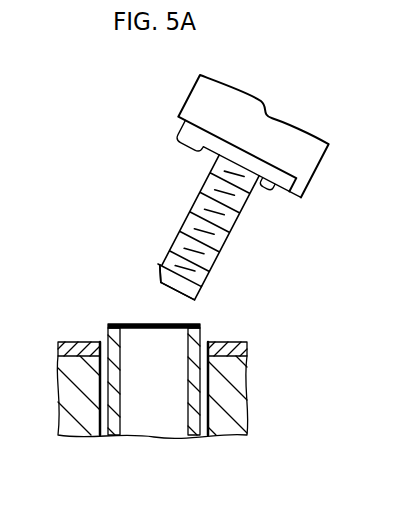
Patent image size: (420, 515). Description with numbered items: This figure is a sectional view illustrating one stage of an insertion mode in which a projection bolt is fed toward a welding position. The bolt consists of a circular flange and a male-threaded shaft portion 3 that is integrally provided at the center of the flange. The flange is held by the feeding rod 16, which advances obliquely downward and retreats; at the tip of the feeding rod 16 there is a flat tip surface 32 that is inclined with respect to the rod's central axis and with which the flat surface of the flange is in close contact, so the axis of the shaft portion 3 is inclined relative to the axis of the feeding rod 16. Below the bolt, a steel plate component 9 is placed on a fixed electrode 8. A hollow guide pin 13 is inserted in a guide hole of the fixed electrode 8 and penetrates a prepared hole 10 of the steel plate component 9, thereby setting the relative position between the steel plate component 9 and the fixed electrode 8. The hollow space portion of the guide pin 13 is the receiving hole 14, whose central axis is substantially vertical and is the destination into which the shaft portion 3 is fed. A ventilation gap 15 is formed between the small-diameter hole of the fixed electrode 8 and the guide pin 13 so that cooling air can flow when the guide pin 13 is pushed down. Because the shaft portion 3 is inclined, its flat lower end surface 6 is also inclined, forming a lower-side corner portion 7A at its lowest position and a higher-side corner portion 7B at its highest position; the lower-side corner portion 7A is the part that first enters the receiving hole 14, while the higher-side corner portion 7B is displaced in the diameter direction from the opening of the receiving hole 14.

The feeding rod 16 is at (182, 96).
The tip surface 32 is at (205, 147).
The shaft portion 3 is at (233, 224).
The lower-side corner portion 7A is at (192, 301).
The higher-side corner portion 7B is at (153, 282).
The lower end surface 6 is at (176, 290).
The prepared hole 10 is at (105, 327).
The steel plate component 9 is at (73, 341).
The guide pin 13 is at (112, 380).
The ventilation gap 15 is at (203, 383).
The fixed electrode 8 is at (238, 412).
The receiving hole 14 is at (153, 412).